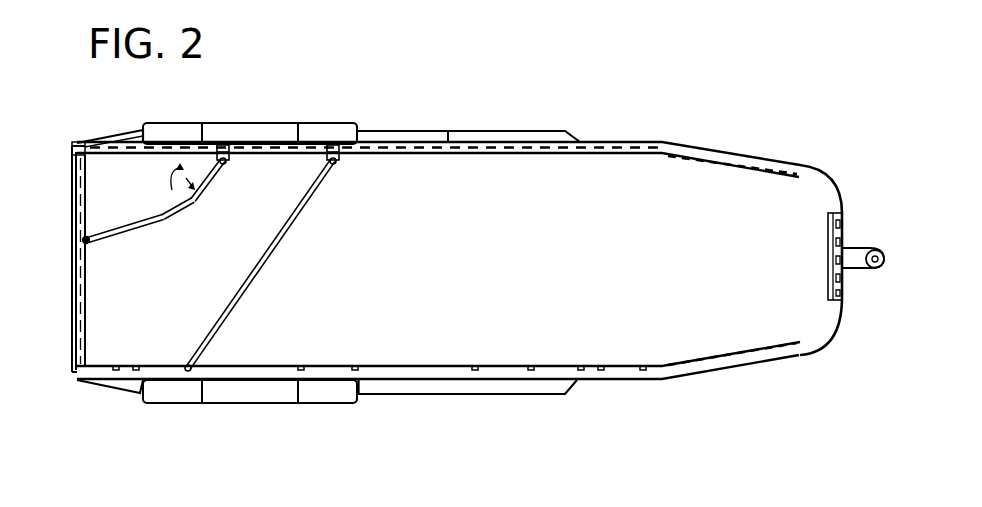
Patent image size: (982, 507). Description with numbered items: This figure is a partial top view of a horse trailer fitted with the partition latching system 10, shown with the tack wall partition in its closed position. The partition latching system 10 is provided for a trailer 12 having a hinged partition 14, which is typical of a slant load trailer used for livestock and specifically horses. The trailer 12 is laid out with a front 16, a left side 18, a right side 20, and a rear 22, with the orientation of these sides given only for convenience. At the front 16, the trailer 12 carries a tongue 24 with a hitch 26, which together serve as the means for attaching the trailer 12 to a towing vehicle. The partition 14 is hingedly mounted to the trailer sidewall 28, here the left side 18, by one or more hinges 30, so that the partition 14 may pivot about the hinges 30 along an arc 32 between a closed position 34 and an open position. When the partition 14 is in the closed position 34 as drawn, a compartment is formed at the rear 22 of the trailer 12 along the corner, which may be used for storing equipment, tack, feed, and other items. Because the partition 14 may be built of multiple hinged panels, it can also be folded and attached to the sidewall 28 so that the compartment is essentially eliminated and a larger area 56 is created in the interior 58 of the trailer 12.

The partition latching system 10 is at (63, 214).
The trailer 12 is at (842, 205).
The partition 14 is at (190, 198).
The front 16 is at (843, 235).
The left side 18 is at (697, 145).
The right side 20 is at (650, 380).
The rear 22 is at (73, 268).
The tongue 24 is at (860, 270).
The hitch 26 is at (882, 270).
The sidewall 28 is at (103, 140).
The hinges 30 is at (238, 159).
The arc 32 is at (183, 177).
The closed position 34 is at (140, 237).
The larger area 56 is at (77, 381).
The interior 58 is at (408, 332).